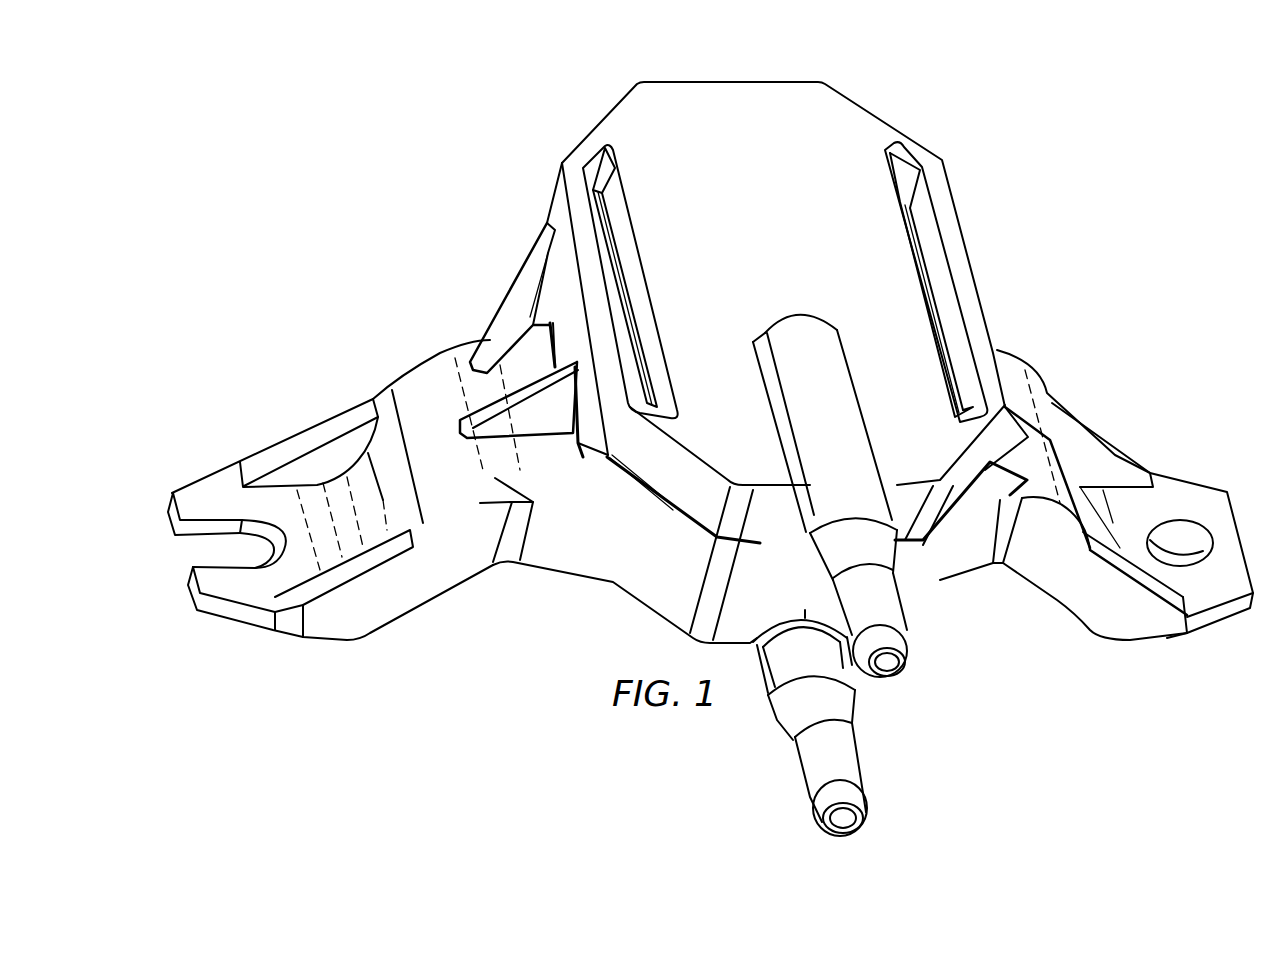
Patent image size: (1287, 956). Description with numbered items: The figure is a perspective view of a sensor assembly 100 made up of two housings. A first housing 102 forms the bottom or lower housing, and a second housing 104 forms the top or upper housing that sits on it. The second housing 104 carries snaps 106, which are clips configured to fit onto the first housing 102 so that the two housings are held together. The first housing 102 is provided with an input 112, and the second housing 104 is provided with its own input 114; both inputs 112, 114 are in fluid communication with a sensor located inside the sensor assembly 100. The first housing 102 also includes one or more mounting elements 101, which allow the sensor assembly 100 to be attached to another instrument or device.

The sensor assembly 100 is at (419, 164).
The mounting element 101 is at (303, 418).
The first housing 102 is at (575, 563).
The second housing 104 is at (851, 115).
The snap 106 is at (568, 328).
The input 112 is at (862, 795).
The input 114 is at (905, 646).